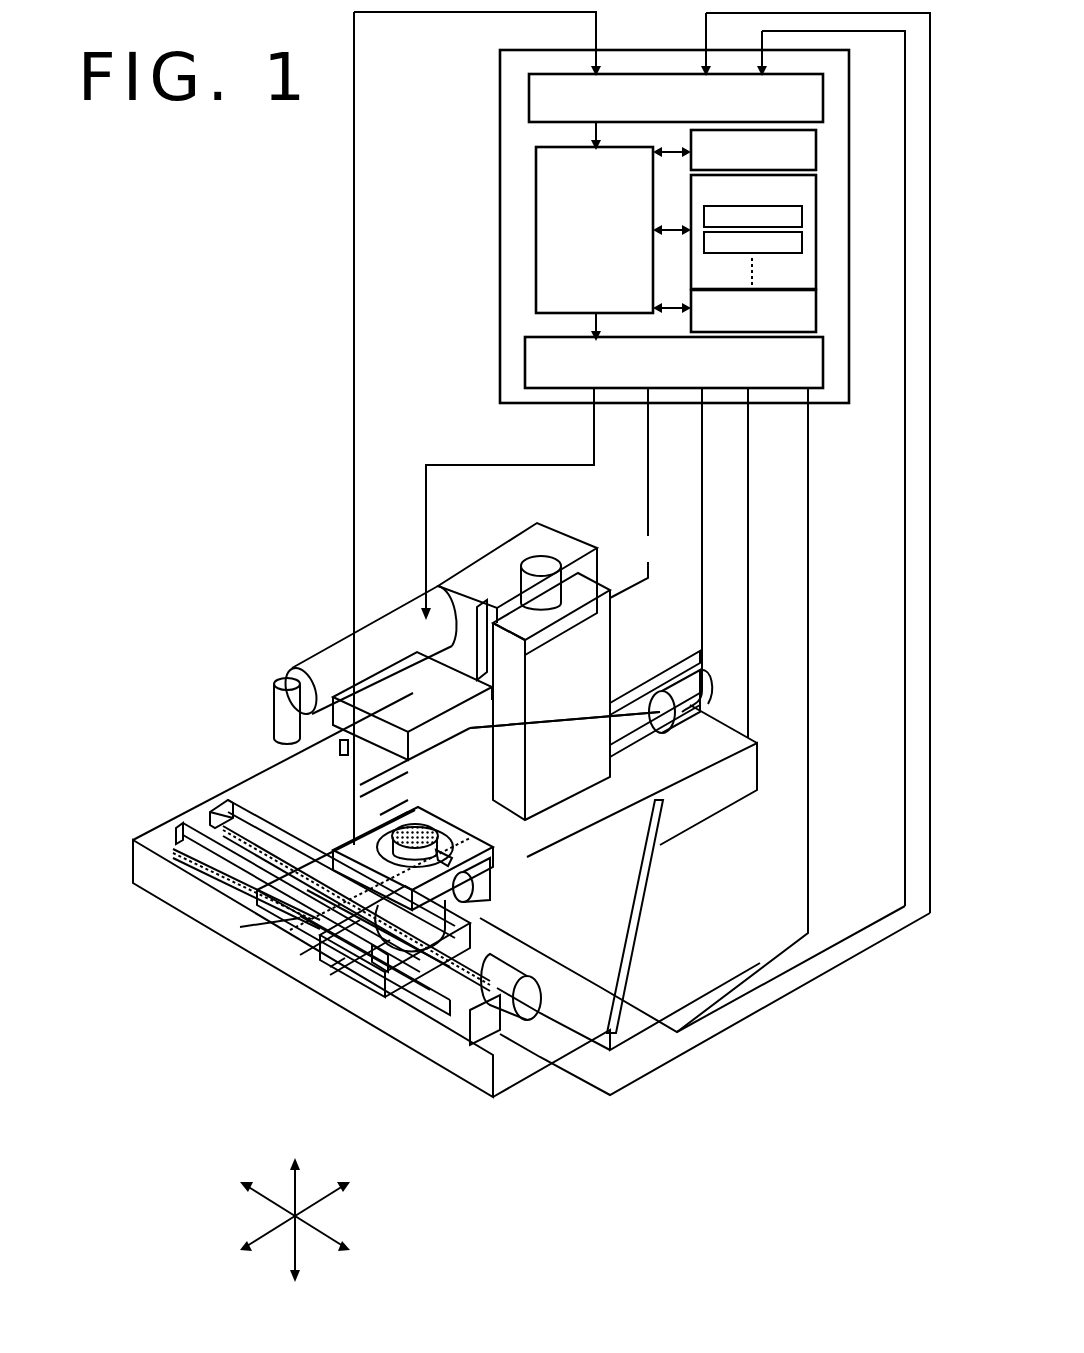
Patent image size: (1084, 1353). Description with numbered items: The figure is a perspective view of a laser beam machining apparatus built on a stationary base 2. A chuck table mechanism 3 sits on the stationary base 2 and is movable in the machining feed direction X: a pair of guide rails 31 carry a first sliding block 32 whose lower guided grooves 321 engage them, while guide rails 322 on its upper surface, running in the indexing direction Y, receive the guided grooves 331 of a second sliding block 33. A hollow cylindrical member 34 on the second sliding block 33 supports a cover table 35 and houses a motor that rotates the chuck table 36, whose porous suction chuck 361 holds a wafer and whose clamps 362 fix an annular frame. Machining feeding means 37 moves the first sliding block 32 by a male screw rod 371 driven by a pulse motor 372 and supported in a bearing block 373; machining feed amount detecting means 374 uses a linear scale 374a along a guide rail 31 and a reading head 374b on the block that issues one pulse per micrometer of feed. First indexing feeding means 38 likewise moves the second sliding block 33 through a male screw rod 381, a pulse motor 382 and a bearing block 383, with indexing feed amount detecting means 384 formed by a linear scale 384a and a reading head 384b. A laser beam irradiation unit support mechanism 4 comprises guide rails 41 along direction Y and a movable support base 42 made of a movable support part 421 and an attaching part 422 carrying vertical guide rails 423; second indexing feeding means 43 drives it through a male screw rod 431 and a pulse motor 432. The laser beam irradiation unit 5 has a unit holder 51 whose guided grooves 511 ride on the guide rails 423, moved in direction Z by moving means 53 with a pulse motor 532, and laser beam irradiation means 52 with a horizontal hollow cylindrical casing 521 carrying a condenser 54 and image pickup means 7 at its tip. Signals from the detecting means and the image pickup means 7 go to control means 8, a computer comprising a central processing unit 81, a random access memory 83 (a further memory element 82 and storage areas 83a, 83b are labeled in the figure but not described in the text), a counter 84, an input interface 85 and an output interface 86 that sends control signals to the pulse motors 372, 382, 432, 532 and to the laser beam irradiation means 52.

The stationary base 2 is at (700, 922).
The chuck table mechanism 3 is at (625, 950).
The guide rails 31 is at (227, 807).
The first sliding block 32 is at (466, 959).
The guided grooves 321 is at (385, 1010).
The guide rails 322 is at (320, 955).
The second sliding block 33 is at (360, 988).
The guided grooves 331 is at (300, 918).
The hollow cylindrical member 34 is at (420, 1020).
The cover table 35 is at (510, 873).
The chuck table 36 is at (457, 815).
The suction chuck 361 is at (445, 832).
The clamps 362 is at (445, 848).
The machining feeding means 37 is at (341, 987).
The male screw rod 371 is at (260, 865).
The pulse motor 372 is at (523, 1020).
The bearing block 373 is at (215, 805).
The machining feed amount detecting means 374 is at (239, 998).
The linear scale 374a is at (175, 860).
The reading head 374b is at (380, 1050).
The first indexing feeding means 38 is at (455, 992).
The male screw rod 381 is at (300, 935).
The pulse motor 382 is at (515, 890).
The bearing block 383 is at (330, 967).
The indexing feed amount detecting means 384 is at (566, 992).
The linear scale 384a is at (627, 917).
The reading head 384b is at (480, 1040).
The laser beam irradiation unit support mechanism 4 is at (708, 760).
The guide rails 41 is at (408, 790).
The movable support base 42 is at (618, 656).
The movable support part 421 is at (430, 730).
The attaching part 422 is at (610, 627).
The guide rails 423 is at (500, 600).
The second indexing feeding means 43 is at (712, 708).
The male screw rod 431 is at (455, 790).
The pulse motor 432 is at (700, 665).
The laser beam irradiation unit 5 is at (330, 608).
The unit holder 51 is at (507, 552).
The guided grooves 511 is at (430, 585).
The laser beam irradiation means 52 is at (341, 628).
The casing 521 is at (327, 652).
The moving means 53 is at (556, 517).
The pulse motor 532 is at (543, 567).
The condenser 54 is at (273, 707).
The image pickup means 7 is at (340, 752).
The control means 8 is at (646, 46).
The central processing unit (CPU) 81 is at (536, 188).
The read-only memory (ROM) 82 is at (816, 158).
The random access memory (RAM) 83 is at (793, 232).
The first storage area 83a is at (753, 216).
The second storage area 83b is at (816, 226).
The counter 84 is at (816, 291).
The input interface 85 is at (529, 96).
The output interface 86 is at (525, 360).